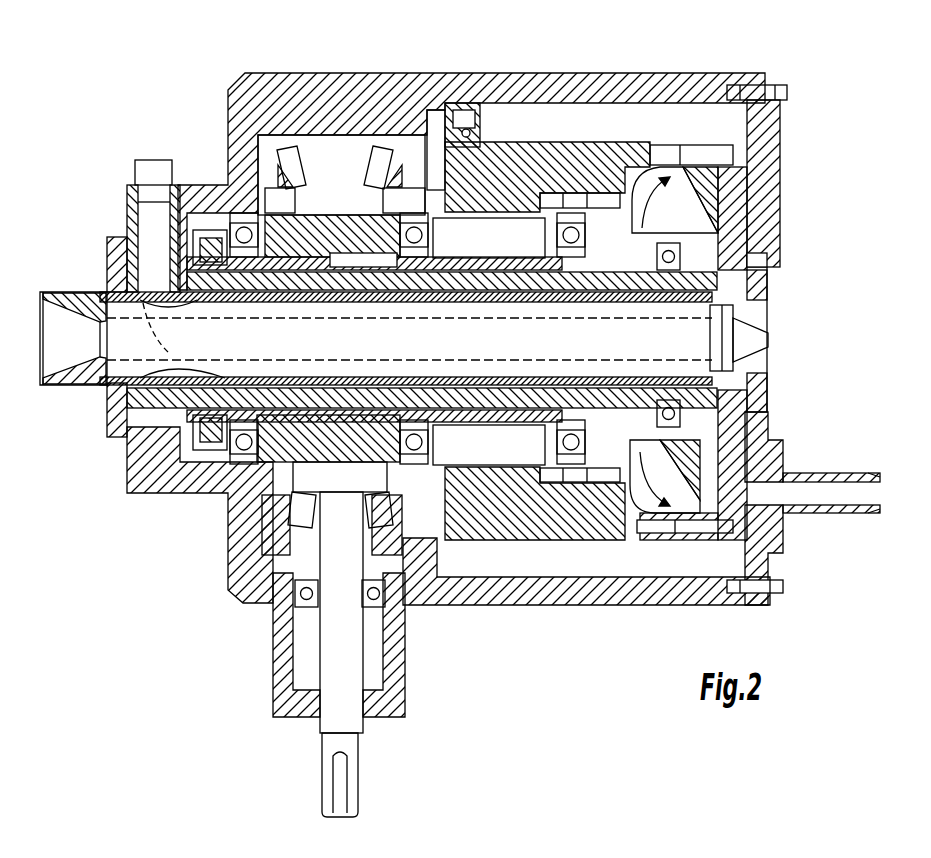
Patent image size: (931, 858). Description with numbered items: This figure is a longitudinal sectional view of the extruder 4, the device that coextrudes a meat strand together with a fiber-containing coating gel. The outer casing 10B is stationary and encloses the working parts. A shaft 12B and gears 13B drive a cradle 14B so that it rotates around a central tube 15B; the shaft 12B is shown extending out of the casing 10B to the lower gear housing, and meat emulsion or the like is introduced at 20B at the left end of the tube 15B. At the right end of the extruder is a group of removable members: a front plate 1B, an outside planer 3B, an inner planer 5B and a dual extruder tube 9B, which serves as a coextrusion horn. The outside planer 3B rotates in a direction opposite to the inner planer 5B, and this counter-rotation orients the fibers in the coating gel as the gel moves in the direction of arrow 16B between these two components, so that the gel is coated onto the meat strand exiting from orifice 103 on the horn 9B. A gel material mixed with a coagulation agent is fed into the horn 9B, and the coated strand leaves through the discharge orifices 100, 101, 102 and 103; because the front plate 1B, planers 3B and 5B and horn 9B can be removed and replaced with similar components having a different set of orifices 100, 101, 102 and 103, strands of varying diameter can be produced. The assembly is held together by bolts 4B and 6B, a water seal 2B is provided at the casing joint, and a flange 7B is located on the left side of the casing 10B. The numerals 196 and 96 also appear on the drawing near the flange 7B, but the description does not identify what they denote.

The casing 10B is at (712, 73).
The extruder 4 is at (777, 52).
The water seal 2B is at (779, 75).
The inner planer 5B is at (690, 143).
The front plate 1B is at (780, 149).
The bolt 4B is at (725, 200).
The outside planer 3B is at (760, 188).
The discharge orifice 102 is at (757, 273).
The discharge orifice 100 is at (688, 330).
The dual extruder tube 9B is at (831, 416).
The discharge orifice 103 is at (727, 348).
The discharge orifice 101 is at (757, 368).
The bolt 6B is at (770, 419).
The arrow 16B is at (598, 480).
The cradle 14B is at (633, 507).
The gears 13B is at (272, 565).
The shaft 12B is at (327, 656).
The pin 196 is at (153, 167).
The flange 7B is at (106, 250).
The flange block 96 is at (110, 278).
The tube 15B is at (39, 362).
The meat emulsion inlet 20B is at (110, 396).